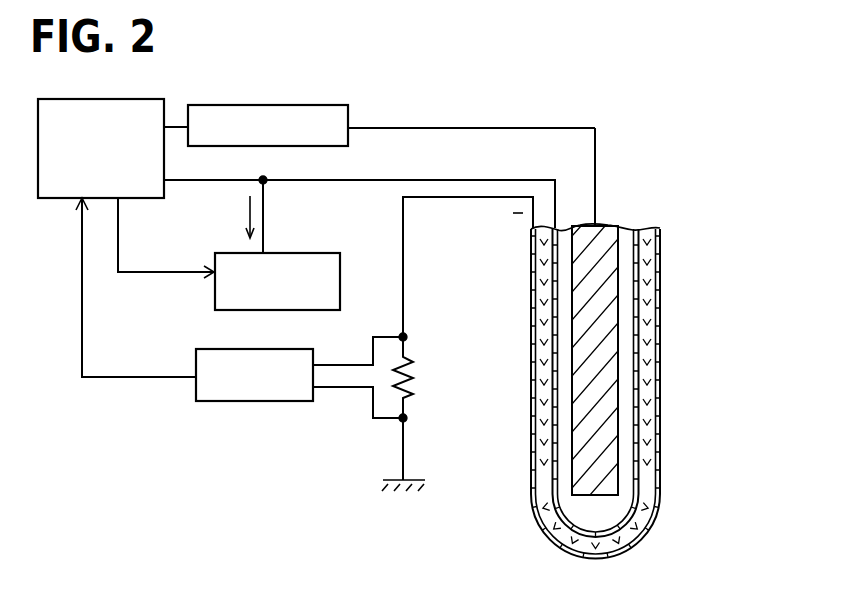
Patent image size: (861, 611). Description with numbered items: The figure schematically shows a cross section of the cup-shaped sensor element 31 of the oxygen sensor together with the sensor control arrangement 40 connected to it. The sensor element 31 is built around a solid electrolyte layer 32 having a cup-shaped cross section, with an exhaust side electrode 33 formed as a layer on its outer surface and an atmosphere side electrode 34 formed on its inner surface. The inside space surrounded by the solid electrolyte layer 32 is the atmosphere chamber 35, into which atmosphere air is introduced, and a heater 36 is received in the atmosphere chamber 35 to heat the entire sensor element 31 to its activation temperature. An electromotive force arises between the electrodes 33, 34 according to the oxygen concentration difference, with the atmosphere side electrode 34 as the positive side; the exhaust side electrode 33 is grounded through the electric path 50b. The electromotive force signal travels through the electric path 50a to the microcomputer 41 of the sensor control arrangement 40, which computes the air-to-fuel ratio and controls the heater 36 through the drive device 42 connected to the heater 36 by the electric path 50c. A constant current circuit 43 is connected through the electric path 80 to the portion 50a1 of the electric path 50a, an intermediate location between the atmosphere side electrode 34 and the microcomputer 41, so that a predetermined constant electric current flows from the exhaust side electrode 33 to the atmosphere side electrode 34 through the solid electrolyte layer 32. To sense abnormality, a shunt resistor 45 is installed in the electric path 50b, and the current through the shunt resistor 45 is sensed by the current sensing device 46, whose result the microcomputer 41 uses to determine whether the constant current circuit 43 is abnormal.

The microcomputer 41 is at (163, 99).
The drive device 42 is at (290, 105).
The sensor control arrangement 40 is at (370, 113).
The constant current circuit 43 is at (290, 253).
The shunt resistor 45 is at (408, 361).
The current sensing device 46 is at (289, 352).
The electric path 80 is at (265, 212).
The electric path 50a is at (482, 181).
The portion of the electric path 50a1 is at (266, 176).
The electric path 50b is at (403, 238).
The electric path 50c is at (597, 179).
The sensor element 31 is at (678, 166).
The solid electrolyte layer 32 is at (540, 322).
The exhaust side electrode 33 is at (531, 348).
The atmosphere side electrode 34 is at (552, 383).
The atmosphere chamber 35 is at (573, 516).
The heater 36 is at (571, 470).